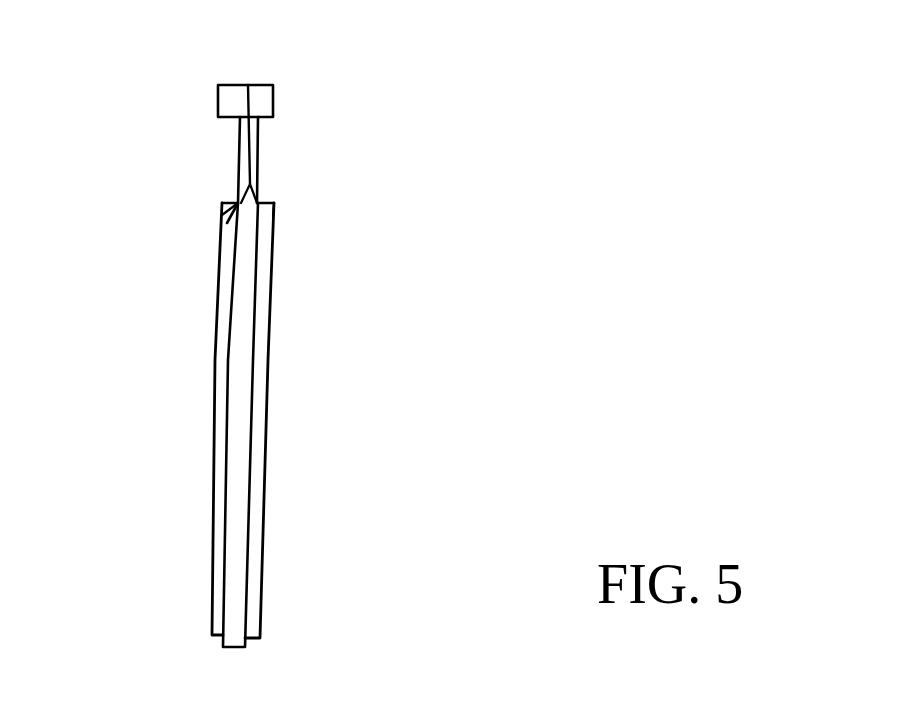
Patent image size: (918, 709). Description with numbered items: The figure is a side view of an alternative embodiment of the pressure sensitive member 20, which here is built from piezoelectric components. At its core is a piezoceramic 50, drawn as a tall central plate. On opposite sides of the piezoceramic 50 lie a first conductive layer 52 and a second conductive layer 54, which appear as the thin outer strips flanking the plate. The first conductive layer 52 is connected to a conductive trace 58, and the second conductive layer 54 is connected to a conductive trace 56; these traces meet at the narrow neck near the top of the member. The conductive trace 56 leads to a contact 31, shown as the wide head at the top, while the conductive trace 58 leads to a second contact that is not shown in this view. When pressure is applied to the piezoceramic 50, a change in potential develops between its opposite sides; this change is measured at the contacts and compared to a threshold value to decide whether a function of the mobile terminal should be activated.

The pressure sensitive member 20 is at (383, 237).
The contact 31 is at (257, 84).
The piezoceramic 50 is at (235, 422).
The first conductive layer 52 is at (212, 557).
The second conductive layer 54 is at (257, 560).
The conductive trace 56 is at (274, 203).
The conductive trace 58 is at (228, 204).